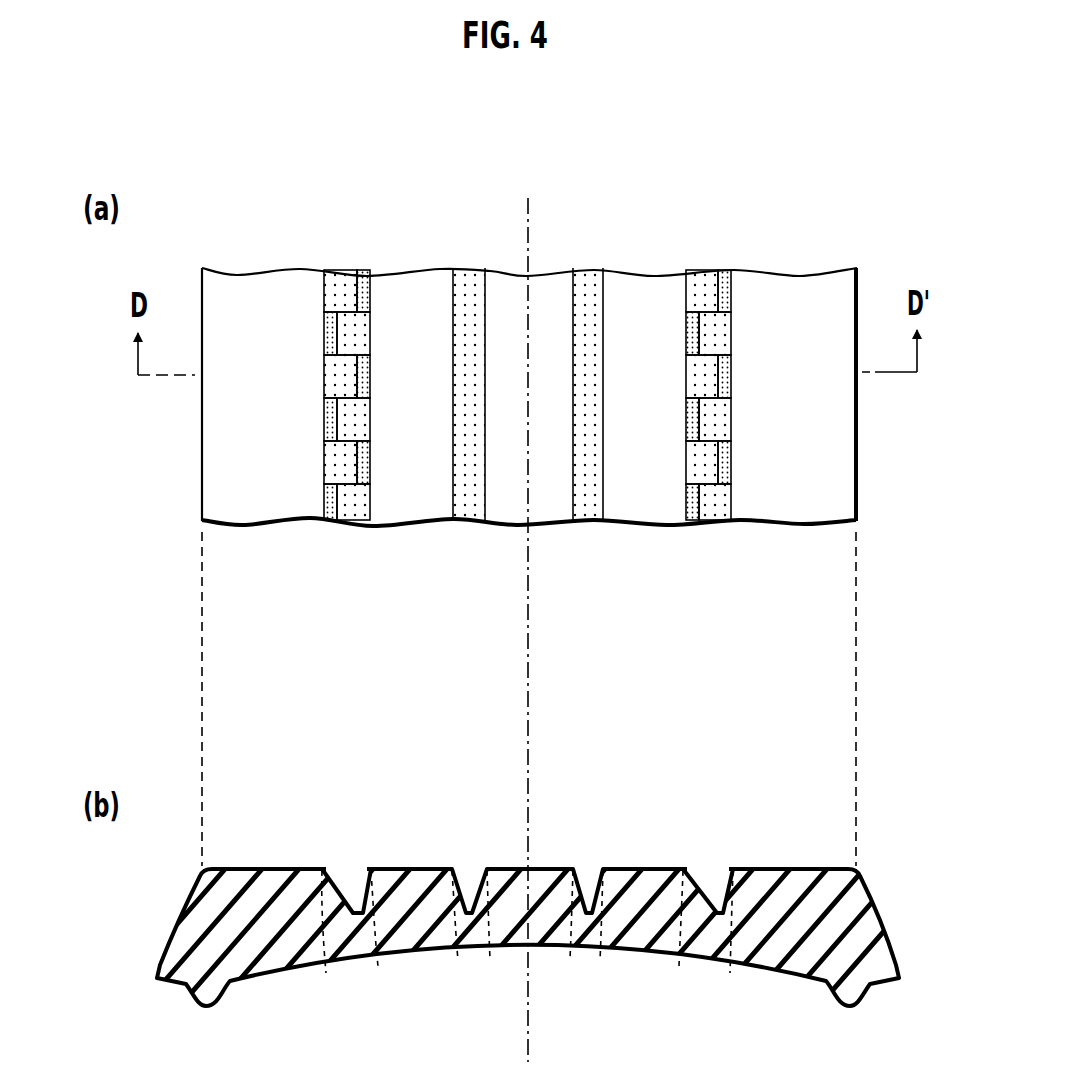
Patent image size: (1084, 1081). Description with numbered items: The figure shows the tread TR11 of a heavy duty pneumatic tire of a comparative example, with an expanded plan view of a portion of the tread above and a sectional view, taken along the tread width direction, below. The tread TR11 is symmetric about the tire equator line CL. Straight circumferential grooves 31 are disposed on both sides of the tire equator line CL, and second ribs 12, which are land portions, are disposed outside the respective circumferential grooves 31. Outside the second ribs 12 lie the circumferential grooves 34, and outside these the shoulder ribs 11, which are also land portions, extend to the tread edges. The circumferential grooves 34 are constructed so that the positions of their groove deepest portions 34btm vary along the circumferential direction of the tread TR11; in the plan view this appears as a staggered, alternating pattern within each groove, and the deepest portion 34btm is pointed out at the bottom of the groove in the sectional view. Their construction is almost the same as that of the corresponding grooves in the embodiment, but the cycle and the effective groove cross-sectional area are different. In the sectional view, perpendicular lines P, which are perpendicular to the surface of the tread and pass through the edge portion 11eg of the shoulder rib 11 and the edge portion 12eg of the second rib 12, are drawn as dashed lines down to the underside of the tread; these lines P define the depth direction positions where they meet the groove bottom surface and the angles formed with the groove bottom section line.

The shoulder rib 11 is at (258, 280).
The second rib 12 is at (408, 282).
The circumferential groove 31 is at (465, 282).
The circumferential groove 34 is at (345, 282).
The groove deepest portion 34btm is at (328, 522).
The edge portion 11eg is at (324, 869).
The edge portion 12eg is at (371, 869).
The tread TR11 is at (751, 214).
The tire equator line CL is at (526, 192).
The perpendicular line P is at (528, 940).